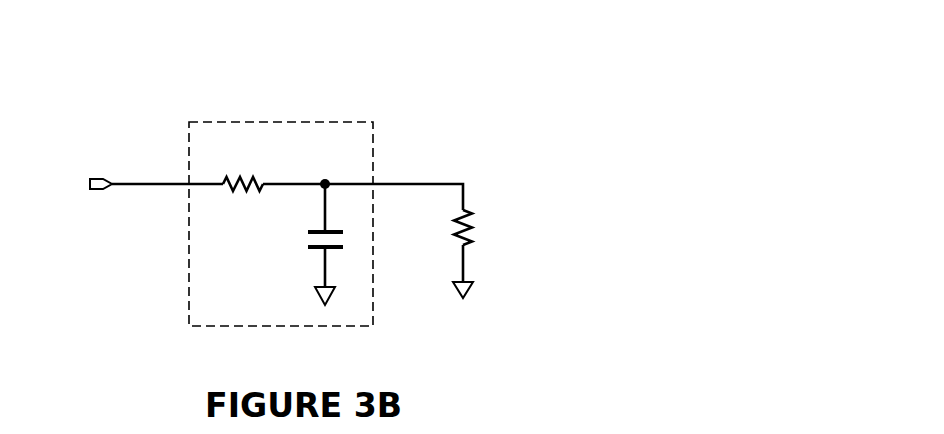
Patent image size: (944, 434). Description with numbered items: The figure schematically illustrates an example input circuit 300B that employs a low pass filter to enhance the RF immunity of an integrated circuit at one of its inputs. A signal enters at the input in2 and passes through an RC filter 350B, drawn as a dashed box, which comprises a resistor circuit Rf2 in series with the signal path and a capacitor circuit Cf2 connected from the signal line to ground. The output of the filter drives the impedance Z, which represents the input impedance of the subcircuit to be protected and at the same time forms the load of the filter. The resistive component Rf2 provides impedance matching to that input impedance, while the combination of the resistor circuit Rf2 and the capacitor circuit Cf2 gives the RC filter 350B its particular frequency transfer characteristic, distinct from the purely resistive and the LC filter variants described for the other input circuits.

The input circuit 300B is at (574, 42).
The RC filter 350B is at (373, 153).
The input terminal in2 is at (82, 182).
The resistor circuit Rf2 is at (243, 169).
The capacitor circuit Cf2 is at (302, 244).
The impedance Z is at (481, 254).